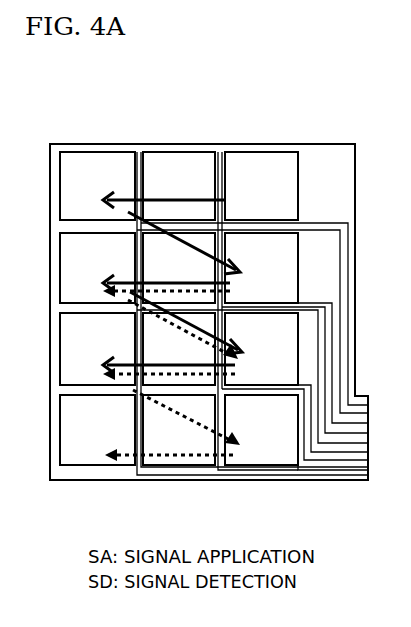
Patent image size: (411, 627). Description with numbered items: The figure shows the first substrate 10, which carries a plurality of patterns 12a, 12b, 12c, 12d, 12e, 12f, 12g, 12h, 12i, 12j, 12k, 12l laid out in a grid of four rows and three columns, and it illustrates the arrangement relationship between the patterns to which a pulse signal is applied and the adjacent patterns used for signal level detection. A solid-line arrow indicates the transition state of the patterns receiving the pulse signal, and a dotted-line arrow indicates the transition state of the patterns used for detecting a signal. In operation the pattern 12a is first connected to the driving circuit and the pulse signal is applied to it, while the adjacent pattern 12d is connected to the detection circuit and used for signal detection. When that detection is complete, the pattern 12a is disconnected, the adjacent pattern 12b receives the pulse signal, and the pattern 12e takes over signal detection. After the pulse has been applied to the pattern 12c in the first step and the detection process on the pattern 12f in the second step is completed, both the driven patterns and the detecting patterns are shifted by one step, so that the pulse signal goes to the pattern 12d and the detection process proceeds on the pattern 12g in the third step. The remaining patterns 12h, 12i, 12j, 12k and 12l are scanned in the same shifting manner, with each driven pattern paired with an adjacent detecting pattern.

The first substrate 10 is at (308, 144).
The pattern 12a is at (245, 160).
The pattern 12b is at (165, 160).
The pattern 12c is at (85, 160).
The pattern 12d is at (292, 262).
The pattern 12e is at (150, 243).
The pattern 12f is at (70, 261).
The pattern 12g is at (283, 346).
The pattern 12h is at (150, 335).
The pattern 12i is at (70, 352).
The pattern 12j is at (262, 455).
The pattern 12k is at (177, 445).
The pattern 12l is at (81, 452).